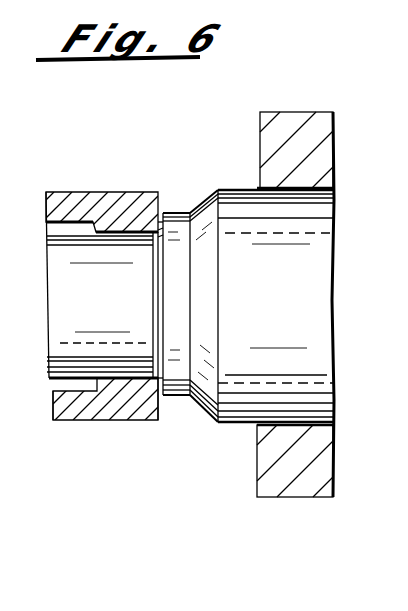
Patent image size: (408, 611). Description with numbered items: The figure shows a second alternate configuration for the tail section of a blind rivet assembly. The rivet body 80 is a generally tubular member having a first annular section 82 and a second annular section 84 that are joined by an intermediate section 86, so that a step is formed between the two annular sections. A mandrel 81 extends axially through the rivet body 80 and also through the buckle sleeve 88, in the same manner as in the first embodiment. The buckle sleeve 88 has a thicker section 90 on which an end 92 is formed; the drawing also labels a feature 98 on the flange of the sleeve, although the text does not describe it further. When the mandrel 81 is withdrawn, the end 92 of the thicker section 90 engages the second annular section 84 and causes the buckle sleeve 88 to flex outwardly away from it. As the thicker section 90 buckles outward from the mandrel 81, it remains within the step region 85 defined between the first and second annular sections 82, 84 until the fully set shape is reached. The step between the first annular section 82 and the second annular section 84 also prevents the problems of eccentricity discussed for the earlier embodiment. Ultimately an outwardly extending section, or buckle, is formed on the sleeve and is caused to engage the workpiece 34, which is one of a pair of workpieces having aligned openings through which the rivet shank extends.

The workpiece 34 is at (303, 125).
The rivet body 80 is at (316, 220).
The mandrel 81 is at (87, 264).
The first annular section 82 is at (208, 212).
The second annular section 84 is at (149, 250).
The step region 85 is at (187, 404).
The intermediate section 86 is at (177, 213).
The buckle sleeve 88 is at (84, 188).
The thicker section 90 is at (108, 412).
The end 92 is at (145, 412).
The flange notch 98 is at (58, 417).